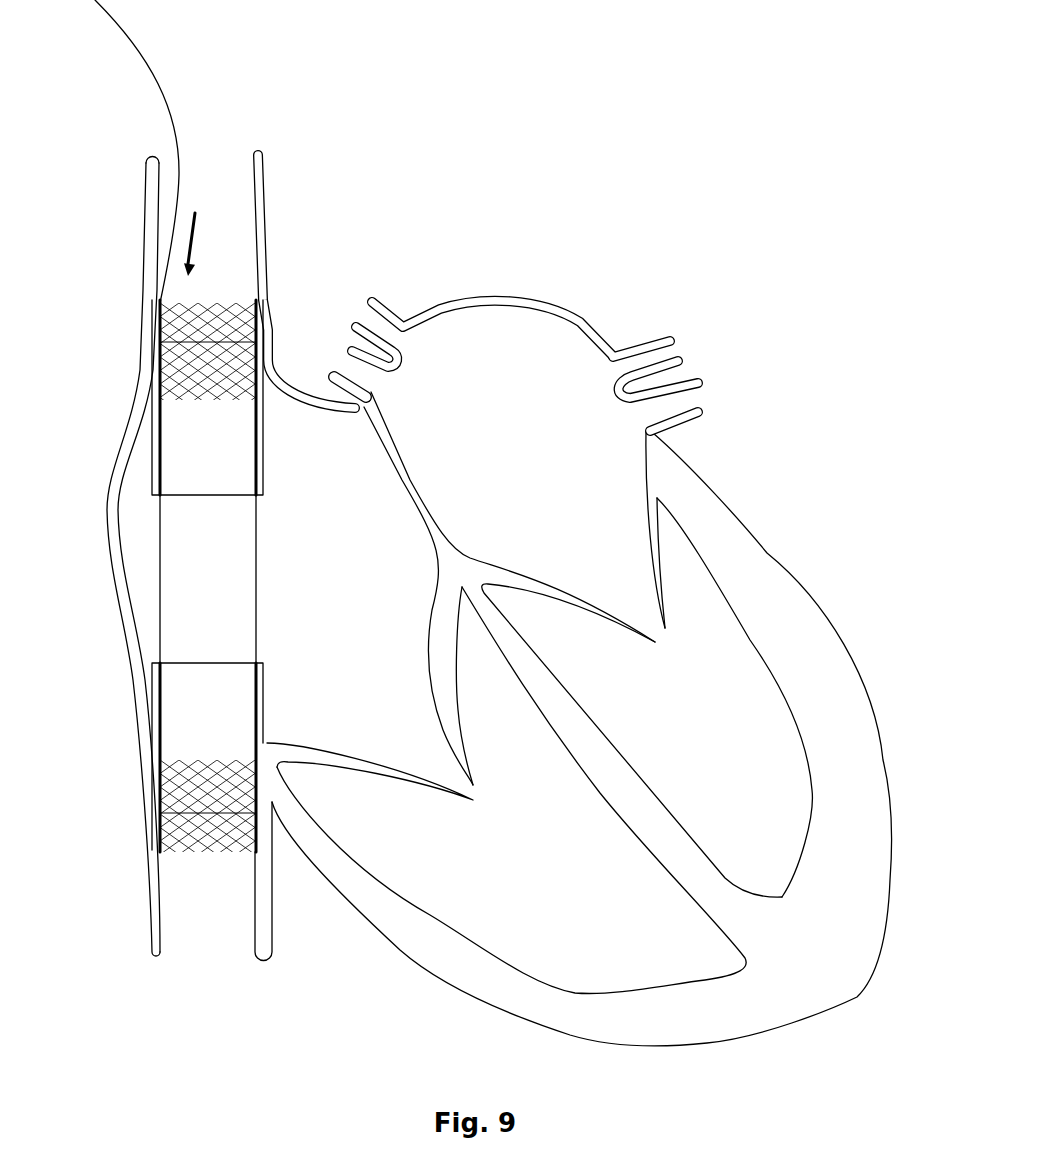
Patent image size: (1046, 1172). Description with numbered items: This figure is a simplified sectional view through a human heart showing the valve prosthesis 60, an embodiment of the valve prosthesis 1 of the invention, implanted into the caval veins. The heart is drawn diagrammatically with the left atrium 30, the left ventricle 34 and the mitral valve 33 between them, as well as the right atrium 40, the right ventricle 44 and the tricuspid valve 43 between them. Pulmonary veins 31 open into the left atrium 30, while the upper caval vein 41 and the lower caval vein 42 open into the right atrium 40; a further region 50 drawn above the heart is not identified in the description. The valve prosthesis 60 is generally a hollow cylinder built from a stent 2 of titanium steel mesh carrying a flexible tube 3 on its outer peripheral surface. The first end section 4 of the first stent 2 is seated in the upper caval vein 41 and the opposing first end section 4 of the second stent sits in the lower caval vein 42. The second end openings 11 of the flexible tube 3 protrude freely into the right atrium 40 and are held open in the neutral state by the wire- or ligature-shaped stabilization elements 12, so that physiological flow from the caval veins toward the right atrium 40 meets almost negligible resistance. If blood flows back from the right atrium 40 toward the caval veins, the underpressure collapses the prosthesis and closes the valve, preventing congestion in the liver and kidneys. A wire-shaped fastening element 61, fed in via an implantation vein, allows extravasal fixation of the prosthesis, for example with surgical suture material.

The valve prosthesis 1 is at (273, 427).
The stent 2 is at (168, 332).
The flexible tube 3 is at (140, 405).
The first end section 4 is at (212, 330).
The second end opening 11 is at (203, 493).
The wire- or ligature-shaped stabilization elements 12 is at (145, 552).
The left atrium 30 is at (473, 437).
The pulmonary veins 31 is at (680, 400).
The mitral valve 33 is at (627, 637).
The left ventricle 34 is at (706, 799).
The right atrium 40 is at (343, 620).
The upper caval vein 41 is at (220, 238).
The lower caval vein 42 is at (200, 937).
The tricuspid valve 43 is at (440, 795).
The right ventricle 44 is at (549, 900).
The lung 50 is at (486, 227).
The valve prosthesis 60 is at (197, 228).
The wire-shaped fastening element 61 is at (157, 107).